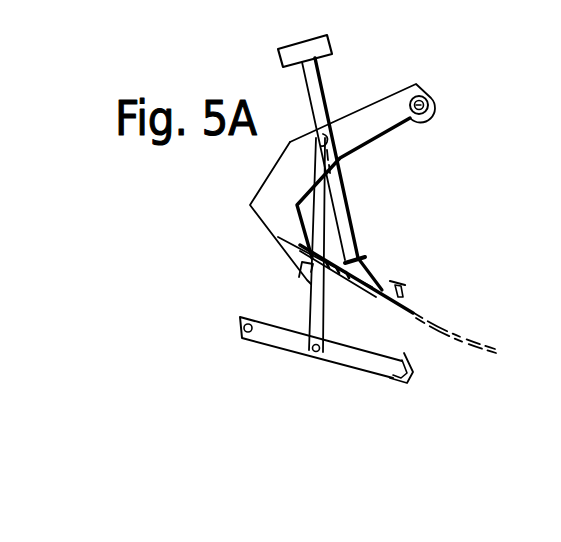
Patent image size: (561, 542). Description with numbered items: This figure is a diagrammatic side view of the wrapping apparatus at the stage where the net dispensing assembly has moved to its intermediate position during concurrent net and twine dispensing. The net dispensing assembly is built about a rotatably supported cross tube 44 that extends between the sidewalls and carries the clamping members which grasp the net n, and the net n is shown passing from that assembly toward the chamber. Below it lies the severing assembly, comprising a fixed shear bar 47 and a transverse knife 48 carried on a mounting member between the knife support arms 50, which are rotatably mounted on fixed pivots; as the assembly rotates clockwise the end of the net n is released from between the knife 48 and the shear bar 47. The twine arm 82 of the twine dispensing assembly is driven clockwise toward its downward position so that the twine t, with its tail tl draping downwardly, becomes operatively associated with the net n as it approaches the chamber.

The twine arm 82 is at (317, 90).
The cross tube 44 is at (429, 103).
The shear bar 47 is at (403, 283).
The knife support arm 50 is at (292, 340).
The transverse knife 48 is at (389, 379).
The net n is at (400, 303).
The twine t is at (440, 330).
The twine tail tl is at (469, 348).